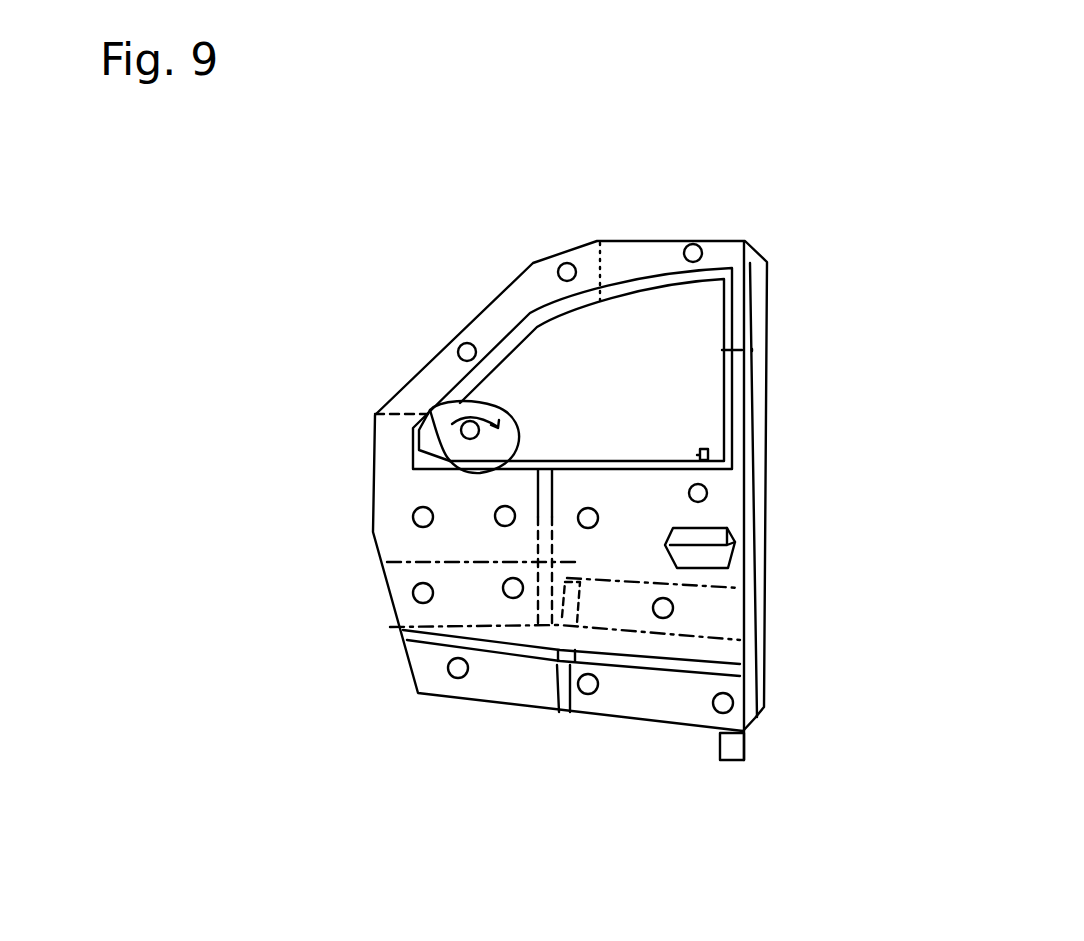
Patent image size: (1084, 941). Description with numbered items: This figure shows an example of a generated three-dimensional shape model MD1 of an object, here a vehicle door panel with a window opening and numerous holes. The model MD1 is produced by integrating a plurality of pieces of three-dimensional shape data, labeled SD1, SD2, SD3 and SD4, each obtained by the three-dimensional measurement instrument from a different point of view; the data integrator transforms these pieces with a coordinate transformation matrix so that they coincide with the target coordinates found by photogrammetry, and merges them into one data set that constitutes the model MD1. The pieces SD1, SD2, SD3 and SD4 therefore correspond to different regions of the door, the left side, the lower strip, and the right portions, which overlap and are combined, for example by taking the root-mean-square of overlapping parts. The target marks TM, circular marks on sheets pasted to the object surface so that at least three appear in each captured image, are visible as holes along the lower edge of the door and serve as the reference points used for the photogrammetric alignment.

The three-dimensional shape model MD1 is at (653, 182).
The three-dimensional shape data SD1 is at (403, 537).
The three-dimensional shape data SD2 is at (517, 680).
The three-dimensional shape data SD3 is at (718, 505).
The fourth sub-region of door module SD4 is at (720, 653).
The target marks TM is at (718, 713).